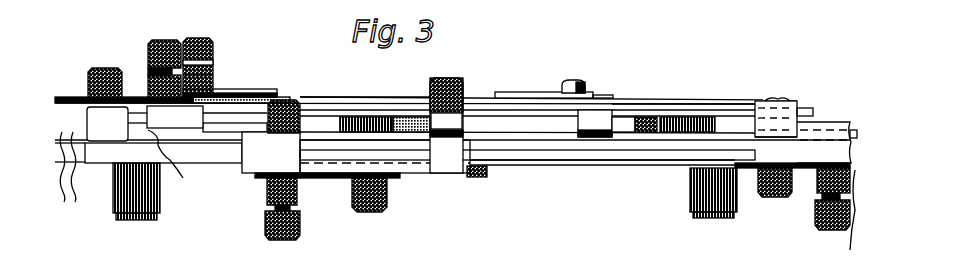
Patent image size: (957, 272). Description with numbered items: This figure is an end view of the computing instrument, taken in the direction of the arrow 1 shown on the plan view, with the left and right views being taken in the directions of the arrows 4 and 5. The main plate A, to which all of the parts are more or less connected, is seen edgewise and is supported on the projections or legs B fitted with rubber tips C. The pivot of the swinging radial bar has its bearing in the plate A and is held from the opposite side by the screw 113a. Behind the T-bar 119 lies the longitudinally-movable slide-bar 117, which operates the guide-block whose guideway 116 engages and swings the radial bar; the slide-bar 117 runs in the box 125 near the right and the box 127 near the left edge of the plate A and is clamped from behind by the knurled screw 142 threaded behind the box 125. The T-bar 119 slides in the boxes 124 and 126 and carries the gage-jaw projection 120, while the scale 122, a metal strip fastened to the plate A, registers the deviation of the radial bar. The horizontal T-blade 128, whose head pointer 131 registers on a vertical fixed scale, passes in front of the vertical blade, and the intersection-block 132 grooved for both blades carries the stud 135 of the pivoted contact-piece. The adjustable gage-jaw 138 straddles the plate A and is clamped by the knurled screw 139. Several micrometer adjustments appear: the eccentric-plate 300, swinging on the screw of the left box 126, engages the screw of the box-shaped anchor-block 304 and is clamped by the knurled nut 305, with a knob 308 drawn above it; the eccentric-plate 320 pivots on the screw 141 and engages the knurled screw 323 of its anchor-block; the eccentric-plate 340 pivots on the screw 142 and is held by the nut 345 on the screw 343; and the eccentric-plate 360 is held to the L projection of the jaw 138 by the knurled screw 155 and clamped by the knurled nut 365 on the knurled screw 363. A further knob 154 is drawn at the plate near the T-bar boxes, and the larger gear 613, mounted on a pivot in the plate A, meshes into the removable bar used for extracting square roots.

The plan view arrow 1 is at (483, 12).
The left view arrow 4 is at (100, 45).
The right view arrow 5 is at (782, 58).
The screw 113a is at (477, 182).
The guideway 116 is at (692, 118).
The slide-bar 117 is at (82, 190).
The T-bar 119 is at (90, 175).
The gage-jaw projection 120 is at (595, 123).
The scale 122 is at (646, 99).
The box 124 is at (781, 103).
The box 125 is at (757, 136).
The left box 126 is at (107, 124).
The box 127 is at (108, 210).
The horizontal T-blade 128 is at (373, 97).
The pointer 131 is at (180, 160).
The intersection-block 132 is at (526, 92).
The stud 135 is at (586, 86).
The adjustable gage-jaw 138 is at (446, 121).
The knurled screw 139 is at (446, 78).
The screw 141 is at (214, 79).
The knurled screw 142 is at (769, 198).
The locking knob 154 is at (285, 100).
The knurled screw 155 is at (388, 200).
The eccentric-plate 300 is at (80, 97).
The anchor-block 304 is at (175, 117).
The knurled nut 305 is at (150, 80).
The knob 308 is at (155, 42).
The eccentric-plate 320 is at (232, 90).
The knurled screw 323 is at (214, 53).
The eccentric-plate 340 is at (806, 170).
The screw 343 is at (830, 232).
The nut 345 is at (797, 259).
The eccentric-plate 360 is at (262, 186).
The knurled screw 363 is at (300, 220).
The knurled nut 365 is at (298, 194).
The larger gear 613 is at (339, 120).
The main plate A is at (612, 181).
The projections or legs B is at (690, 190).
The rubber tips C is at (425, 200).